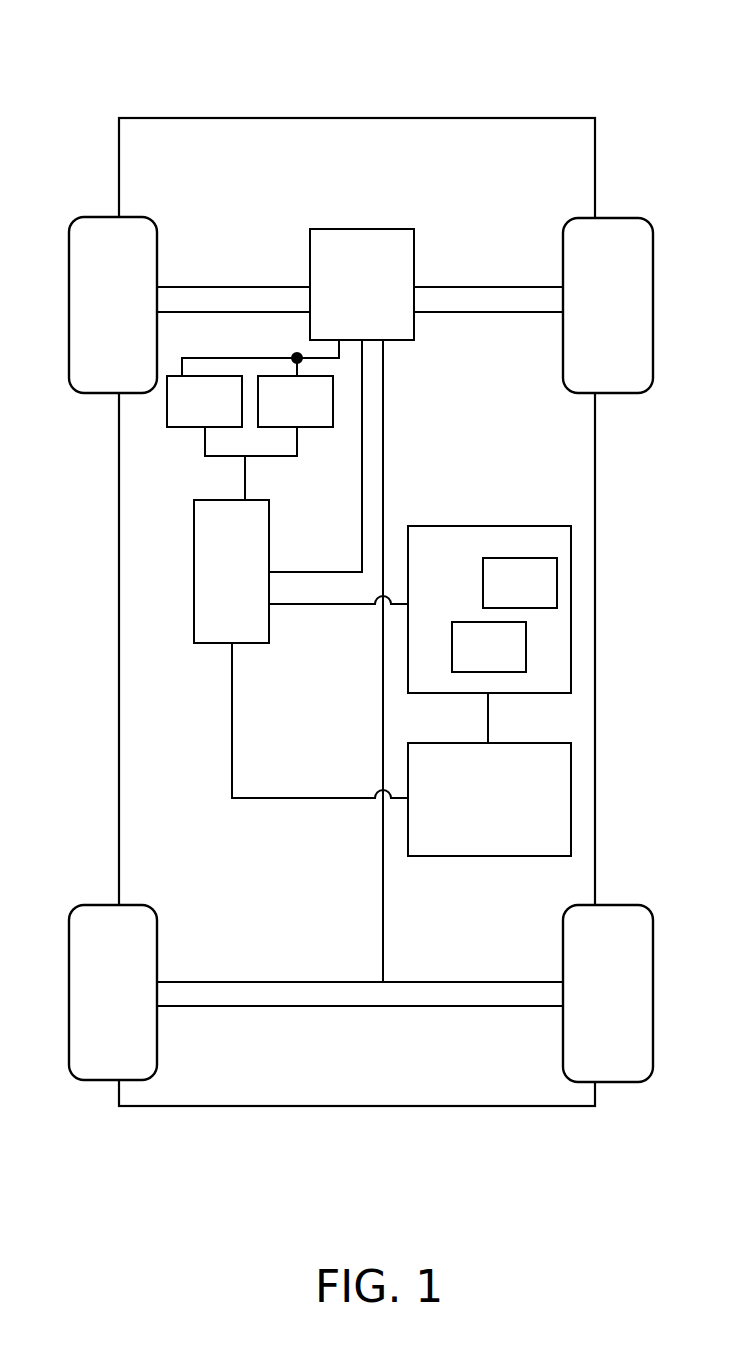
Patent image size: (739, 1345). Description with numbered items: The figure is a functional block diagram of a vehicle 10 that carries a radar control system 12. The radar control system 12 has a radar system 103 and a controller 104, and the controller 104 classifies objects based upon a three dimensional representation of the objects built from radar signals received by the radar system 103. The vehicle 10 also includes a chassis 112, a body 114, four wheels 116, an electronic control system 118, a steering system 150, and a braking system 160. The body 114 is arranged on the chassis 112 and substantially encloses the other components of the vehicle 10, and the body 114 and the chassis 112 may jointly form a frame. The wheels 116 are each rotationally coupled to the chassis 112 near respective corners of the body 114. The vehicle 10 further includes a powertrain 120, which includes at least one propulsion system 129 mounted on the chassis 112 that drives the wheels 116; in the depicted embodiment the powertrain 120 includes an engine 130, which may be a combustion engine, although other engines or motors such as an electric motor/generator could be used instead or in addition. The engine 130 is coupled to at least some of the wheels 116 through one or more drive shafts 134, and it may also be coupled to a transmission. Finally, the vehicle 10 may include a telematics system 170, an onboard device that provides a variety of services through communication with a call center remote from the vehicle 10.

The vehicle 10 is at (637, 112).
The radar control system 12 is at (450, 565).
The radar system 103 is at (506, 662).
The controller 104 is at (537, 601).
The chassis 112 is at (383, 906).
The body 114 is at (119, 738).
The wheels 116 is at (128, 257).
The electronic control system 118 is at (251, 540).
The powertrain 120 is at (404, 348).
The propulsion system 129 is at (360, 229).
The engine 130 is at (368, 265).
The drive shafts 134 is at (276, 287).
The steering system 150 is at (224, 418).
The braking system 160 is at (315, 418).
The telematics system 170 is at (463, 780).